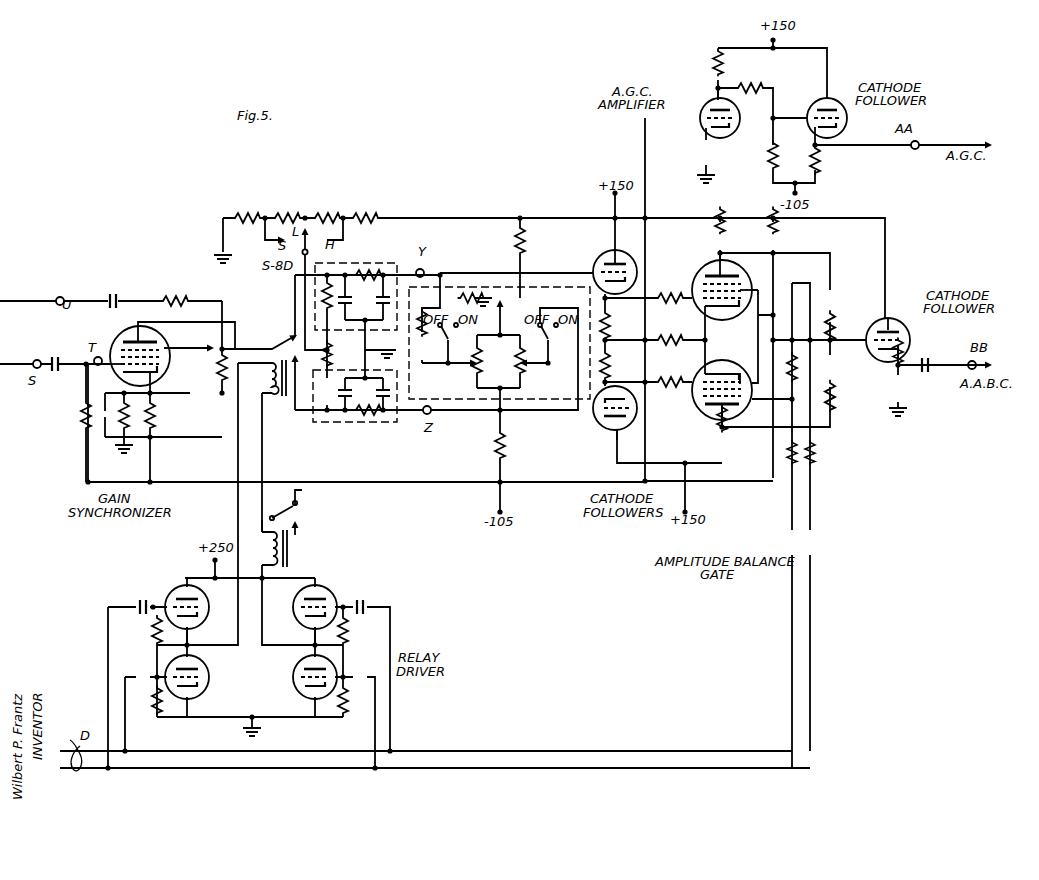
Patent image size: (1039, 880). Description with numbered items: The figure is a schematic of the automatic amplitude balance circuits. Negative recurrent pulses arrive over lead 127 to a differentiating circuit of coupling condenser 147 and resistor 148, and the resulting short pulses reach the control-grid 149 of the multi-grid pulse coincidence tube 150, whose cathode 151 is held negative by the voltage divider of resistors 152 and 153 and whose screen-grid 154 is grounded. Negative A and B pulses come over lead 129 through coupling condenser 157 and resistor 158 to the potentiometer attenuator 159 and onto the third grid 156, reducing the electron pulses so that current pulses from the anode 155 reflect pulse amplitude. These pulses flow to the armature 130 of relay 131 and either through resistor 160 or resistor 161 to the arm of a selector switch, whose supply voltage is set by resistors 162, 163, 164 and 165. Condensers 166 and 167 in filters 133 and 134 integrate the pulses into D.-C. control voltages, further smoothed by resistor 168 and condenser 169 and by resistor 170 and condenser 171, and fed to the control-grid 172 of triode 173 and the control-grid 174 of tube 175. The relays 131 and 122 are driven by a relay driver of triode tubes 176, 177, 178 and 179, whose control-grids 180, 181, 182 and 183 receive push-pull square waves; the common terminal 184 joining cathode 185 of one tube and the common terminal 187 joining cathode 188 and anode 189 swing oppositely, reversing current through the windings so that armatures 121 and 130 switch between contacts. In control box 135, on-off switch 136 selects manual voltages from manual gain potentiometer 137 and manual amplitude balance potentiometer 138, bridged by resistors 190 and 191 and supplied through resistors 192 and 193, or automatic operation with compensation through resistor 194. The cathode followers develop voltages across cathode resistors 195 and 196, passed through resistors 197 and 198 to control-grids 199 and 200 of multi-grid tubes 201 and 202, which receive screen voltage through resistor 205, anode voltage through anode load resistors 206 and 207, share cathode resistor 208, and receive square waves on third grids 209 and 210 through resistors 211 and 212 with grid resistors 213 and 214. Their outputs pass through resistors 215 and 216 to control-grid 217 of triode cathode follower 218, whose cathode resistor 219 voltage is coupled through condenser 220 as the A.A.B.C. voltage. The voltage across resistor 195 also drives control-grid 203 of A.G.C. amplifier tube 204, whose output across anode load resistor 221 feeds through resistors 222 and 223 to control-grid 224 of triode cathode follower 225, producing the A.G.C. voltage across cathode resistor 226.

The armature 121 is at (282, 496).
The polarized relay 122 is at (290, 562).
The lead 127 is at (35, 359).
The lead 129 is at (35, 297).
The armature 130 is at (277, 332).
The polarized relay 131 is at (279, 402).
The filter 133 is at (352, 255).
The filter 134 is at (360, 424).
The control box 135 is at (452, 287).
The automatic amplitude balance control on-off switch 136 is at (452, 339).
The manual gain potentiometer 137 is at (506, 300).
The manual amplitude balance potentiometer 138 is at (463, 383).
The coupling condenser 147 is at (57, 370).
The resistor 148 is at (80, 412).
The control-grid 149 is at (116, 366).
The multi-grid pulse coincidence tube 150 is at (120, 334).
The cathode 151 is at (154, 378).
The resistor 152 is at (151, 408).
The resistor 153 is at (124, 432).
The screen-grid 154 is at (214, 365).
The anode 155 is at (156, 341).
The third grid 156 is at (164, 351).
The coupling condenser 157 is at (116, 295).
The resistor 158 is at (176, 295).
The potentiometer attenuator 159 is at (214, 348).
The resistor 160 is at (346, 315).
The resistor 161 is at (322, 415).
The resistor 162 is at (242, 213).
The resistor 163 is at (286, 213).
The resistor 164 is at (328, 213).
The resistor 165 is at (368, 213).
The condenser 166 is at (353, 304).
The condenser 167 is at (343, 413).
The resistor 168 is at (373, 268).
The condenser 169 is at (344, 299).
The resistor 170 is at (366, 407).
The condenser 171 is at (388, 410).
The control-grid 172 is at (594, 269).
The triode 173 is at (612, 253).
The control-grid 174 is at (596, 428).
The tube 175 is at (608, 441).
The triode tube 176 is at (180, 584).
The triode tube 177 is at (166, 661).
The triode tube 178 is at (326, 586).
The triode tube 179 is at (334, 652).
The control-grid 180 is at (164, 600).
The control-grid 181 is at (210, 666).
The control-grid 182 is at (336, 596).
The control-grid 183 is at (292, 672).
The common terminal 184 is at (196, 644).
The cathode 185 is at (206, 610).
The common terminal 187 is at (308, 640).
The cathode 188 is at (298, 613).
The anode 189 is at (304, 662).
The resistor 190 is at (540, 353).
The resistor 191 is at (524, 373).
The resistor 192 is at (494, 447).
The resistor 193 is at (512, 235).
The resistor 194 is at (428, 360).
The cathode resistor 195 is at (611, 312).
The cathode resistor 196 is at (611, 358).
The resistor 197 is at (670, 291).
The resistor 198 is at (678, 379).
The control-grid 199 is at (721, 340).
The control-grid 200 is at (696, 400).
The multi-grid tube 201 is at (698, 267).
The multi-grid tube 202 is at (696, 404).
The control-grid 203 is at (696, 127).
The triode A.G.C. amplifier tube 204 is at (738, 114).
The resistor 205 is at (779, 236).
The anode load resistor 206 is at (715, 234).
The anode load resistor 207 is at (730, 445).
The resistor 208 is at (678, 337).
The third grid 209 is at (744, 282).
The third grid 210 is at (706, 410).
The resistor 211 is at (816, 548).
The resistor 212 is at (784, 538).
The grid resistor 213 is at (779, 340).
The grid resistor 214 is at (802, 360).
The resistor 215 is at (834, 306).
The resistor 216 is at (838, 374).
The control-grid 217 is at (902, 342).
The triode cathode follower 218 is at (888, 320).
The cathode resistor 219 is at (906, 385).
The condenser 220 is at (928, 361).
The anode load resistor 221 is at (710, 66).
The resistor 222 is at (746, 86).
The resistor 223 is at (764, 163).
The control-grid 224 is at (812, 130).
The triode cathode follower 225 is at (802, 108).
The cathode resistor 226 is at (824, 157).